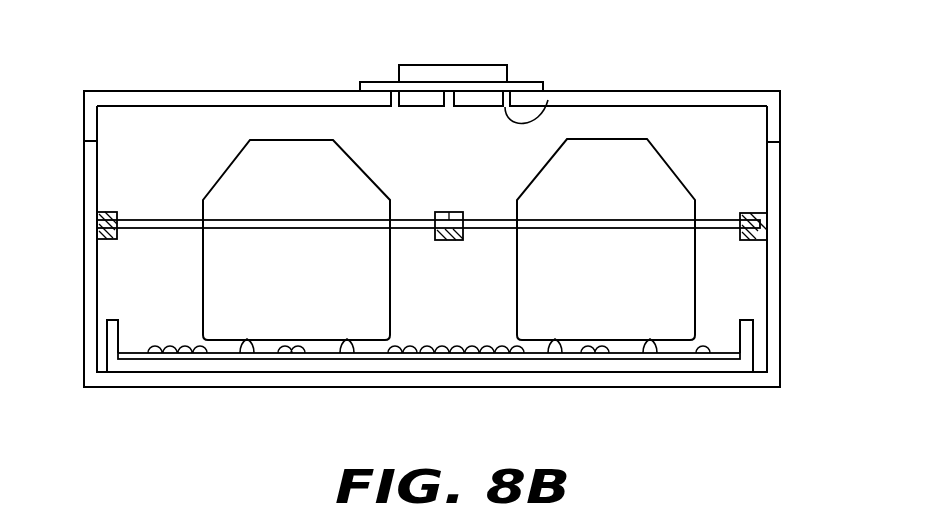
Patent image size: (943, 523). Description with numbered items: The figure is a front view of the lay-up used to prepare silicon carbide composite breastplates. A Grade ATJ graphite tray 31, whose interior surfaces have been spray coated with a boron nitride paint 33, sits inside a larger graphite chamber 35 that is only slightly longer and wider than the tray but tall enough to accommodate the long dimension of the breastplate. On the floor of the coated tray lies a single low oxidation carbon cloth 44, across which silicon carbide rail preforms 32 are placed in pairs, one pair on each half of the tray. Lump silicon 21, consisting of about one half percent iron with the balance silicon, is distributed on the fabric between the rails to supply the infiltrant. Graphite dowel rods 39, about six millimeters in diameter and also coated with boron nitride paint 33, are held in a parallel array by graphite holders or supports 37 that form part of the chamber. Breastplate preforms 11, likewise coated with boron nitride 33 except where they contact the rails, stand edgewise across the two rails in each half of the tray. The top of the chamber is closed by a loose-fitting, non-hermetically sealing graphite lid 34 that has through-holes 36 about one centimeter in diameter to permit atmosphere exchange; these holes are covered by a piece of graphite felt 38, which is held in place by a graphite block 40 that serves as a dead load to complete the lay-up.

The breastplate preform 11 is at (237, 180).
The silicon 21 is at (170, 358).
The graphite tray 31 is at (130, 370).
The silicon carbide rail preform 32 is at (247, 355).
The boron nitride paint 33 is at (138, 219).
The graphite lid 34 is at (111, 98).
The graphite chamber 35 is at (757, 382).
The through-hole 36 is at (545, 104).
The graphite holder 37 is at (103, 240).
The graphite felt 38 is at (368, 82).
The graphite dowel rod 39 is at (727, 222).
The graphite block 40 is at (432, 73).
The carbon cloth 44 is at (703, 360).